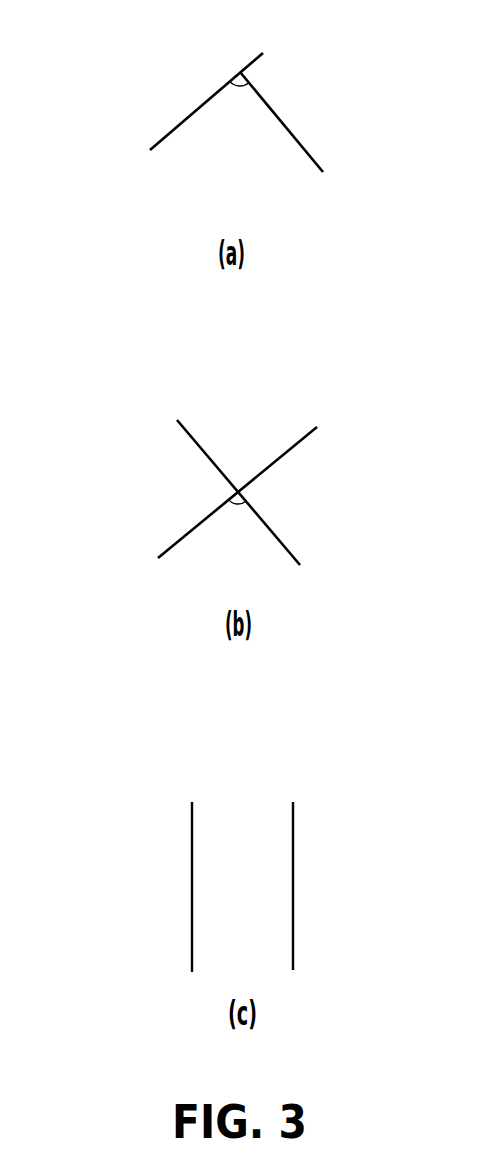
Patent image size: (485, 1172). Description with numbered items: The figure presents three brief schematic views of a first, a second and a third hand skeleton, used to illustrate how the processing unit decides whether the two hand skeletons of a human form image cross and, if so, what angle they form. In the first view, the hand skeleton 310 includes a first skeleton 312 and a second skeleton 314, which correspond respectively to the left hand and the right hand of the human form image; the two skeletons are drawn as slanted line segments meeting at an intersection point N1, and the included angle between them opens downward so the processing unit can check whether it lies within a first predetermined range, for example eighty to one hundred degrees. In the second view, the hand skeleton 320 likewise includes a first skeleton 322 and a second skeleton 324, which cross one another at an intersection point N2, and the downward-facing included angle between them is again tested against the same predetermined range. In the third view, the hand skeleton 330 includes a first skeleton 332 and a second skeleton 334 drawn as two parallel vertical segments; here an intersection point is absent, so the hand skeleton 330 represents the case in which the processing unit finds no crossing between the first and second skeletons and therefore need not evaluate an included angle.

The hand skeleton 310 is at (232, 110).
The first skeleton 312 is at (158, 135).
The second skeleton 314 is at (303, 142).
The intersection point N1 is at (237, 70).
The hand skeleton 320 is at (258, 484).
The first skeleton 322 is at (285, 450).
The second skeleton 324 is at (260, 513).
The intersection point N2 is at (238, 490).
The hand skeleton 330 is at (276, 865).
The first skeleton 332 is at (193, 830).
The second skeleton 334 is at (293, 830).